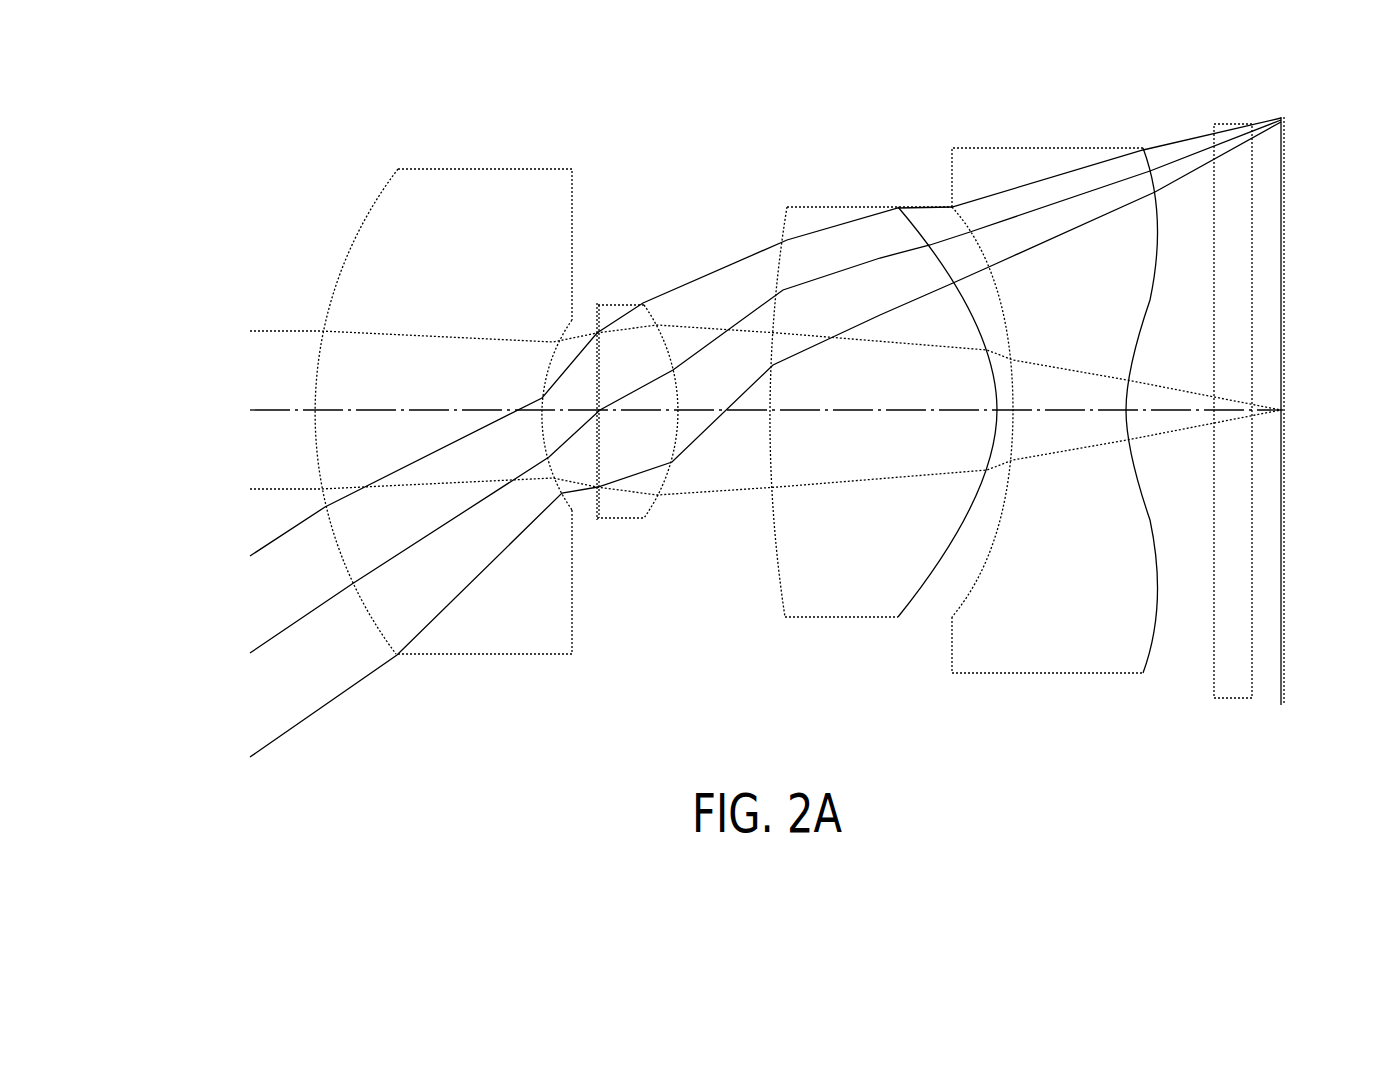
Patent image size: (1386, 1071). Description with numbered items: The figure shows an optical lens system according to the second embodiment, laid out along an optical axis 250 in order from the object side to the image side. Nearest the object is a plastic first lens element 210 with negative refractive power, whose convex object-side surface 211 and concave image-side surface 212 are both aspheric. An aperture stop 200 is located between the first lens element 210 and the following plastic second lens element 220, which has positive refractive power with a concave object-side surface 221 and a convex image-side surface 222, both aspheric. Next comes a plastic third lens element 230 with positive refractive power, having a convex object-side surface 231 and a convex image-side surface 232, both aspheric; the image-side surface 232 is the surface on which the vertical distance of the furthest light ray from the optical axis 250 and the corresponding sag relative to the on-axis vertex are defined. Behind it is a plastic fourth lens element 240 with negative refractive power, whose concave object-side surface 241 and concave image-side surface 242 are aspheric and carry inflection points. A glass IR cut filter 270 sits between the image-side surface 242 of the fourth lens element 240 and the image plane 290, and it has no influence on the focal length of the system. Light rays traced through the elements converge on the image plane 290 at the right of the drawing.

The aperture stop 200 is at (595, 326).
The first lens element 210 is at (420, 395).
The object-side surface of the first lens element 211 is at (347, 238).
The image-side surface of the first lens element 212 is at (557, 493).
The second lens element 220 is at (663, 396).
The object-side surface of the second lens element 221 is at (600, 453).
The image-side surface of the second lens element 222 is at (668, 468).
The third lens element 230 is at (867, 415).
The object-side surface of the third lens element 231 is at (780, 537).
The image-side surface of the third lens element 232 is at (915, 597).
The fourth lens element 240 is at (1082, 396).
The object-side surface of the fourth lens element 241 is at (970, 595).
The image-side surface of the fourth lens element 242 is at (1157, 622).
The optical axis 250 is at (280, 410).
The IR cut filter 270 is at (1220, 120).
The image plane 290 is at (1284, 233).